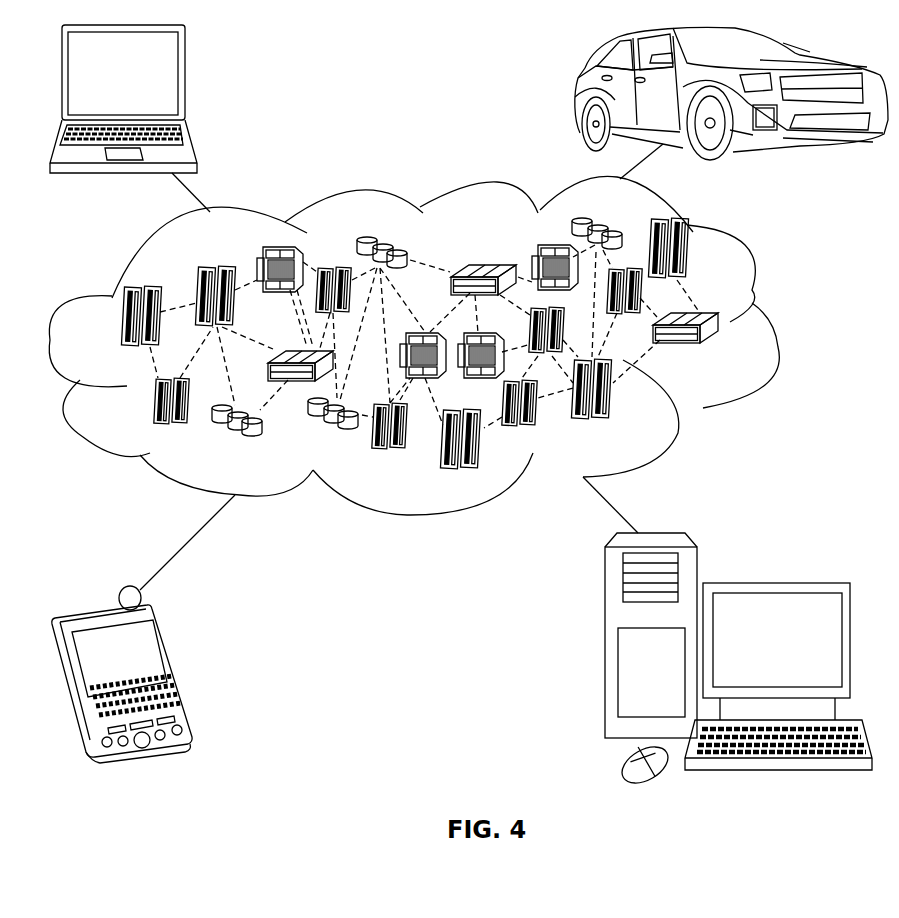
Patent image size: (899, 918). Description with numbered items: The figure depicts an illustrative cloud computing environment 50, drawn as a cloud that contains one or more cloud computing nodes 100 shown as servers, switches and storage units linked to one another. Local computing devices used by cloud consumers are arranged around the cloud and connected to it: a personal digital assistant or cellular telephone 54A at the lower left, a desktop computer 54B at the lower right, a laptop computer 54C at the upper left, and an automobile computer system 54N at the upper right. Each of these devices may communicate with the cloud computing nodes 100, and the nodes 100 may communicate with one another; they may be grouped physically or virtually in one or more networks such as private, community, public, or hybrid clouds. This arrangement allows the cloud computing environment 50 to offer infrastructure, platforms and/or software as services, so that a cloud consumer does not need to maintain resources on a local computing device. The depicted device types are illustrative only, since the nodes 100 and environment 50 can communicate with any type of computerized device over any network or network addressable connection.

The cloud computing environment 50 is at (775, 323).
The cloud computing nodes 100 is at (723, 351).
The personal digital assistant or cellular telephone 54A is at (178, 667).
The desktop computer 54B is at (773, 583).
The laptop computer 54C is at (185, 78).
The automobile computer system 54N is at (580, 92).